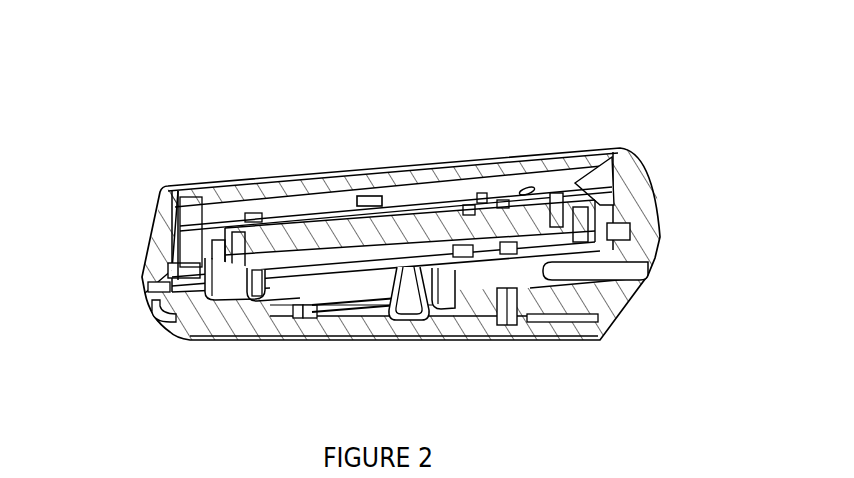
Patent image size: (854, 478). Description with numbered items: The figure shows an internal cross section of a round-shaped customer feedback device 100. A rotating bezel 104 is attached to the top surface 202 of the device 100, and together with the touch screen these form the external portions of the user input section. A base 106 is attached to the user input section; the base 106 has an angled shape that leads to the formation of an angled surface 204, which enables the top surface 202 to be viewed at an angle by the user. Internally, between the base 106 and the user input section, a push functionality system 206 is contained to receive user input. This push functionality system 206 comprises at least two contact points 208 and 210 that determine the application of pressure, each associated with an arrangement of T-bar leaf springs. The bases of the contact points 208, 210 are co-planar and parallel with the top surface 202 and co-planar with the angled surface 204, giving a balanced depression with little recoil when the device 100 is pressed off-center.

The customer feedback device 100 is at (476, 27).
The rotating bezel 104 is at (140, 243).
The base 106 is at (660, 285).
The top surface 202 is at (277, 177).
The angled surface 204 is at (457, 262).
The push functionality system 206 is at (377, 207).
The contact point 208 is at (225, 300).
The contact point 210 is at (590, 263).